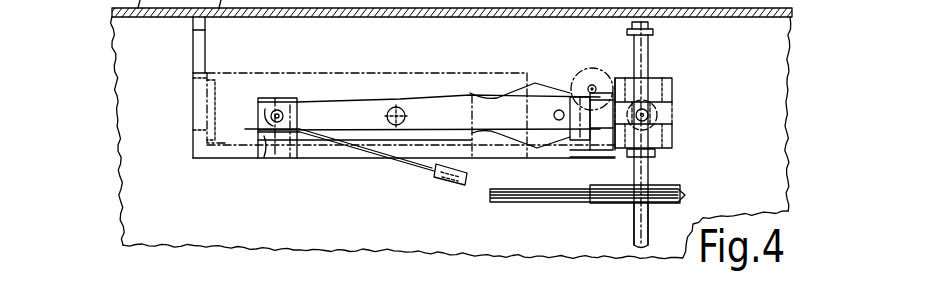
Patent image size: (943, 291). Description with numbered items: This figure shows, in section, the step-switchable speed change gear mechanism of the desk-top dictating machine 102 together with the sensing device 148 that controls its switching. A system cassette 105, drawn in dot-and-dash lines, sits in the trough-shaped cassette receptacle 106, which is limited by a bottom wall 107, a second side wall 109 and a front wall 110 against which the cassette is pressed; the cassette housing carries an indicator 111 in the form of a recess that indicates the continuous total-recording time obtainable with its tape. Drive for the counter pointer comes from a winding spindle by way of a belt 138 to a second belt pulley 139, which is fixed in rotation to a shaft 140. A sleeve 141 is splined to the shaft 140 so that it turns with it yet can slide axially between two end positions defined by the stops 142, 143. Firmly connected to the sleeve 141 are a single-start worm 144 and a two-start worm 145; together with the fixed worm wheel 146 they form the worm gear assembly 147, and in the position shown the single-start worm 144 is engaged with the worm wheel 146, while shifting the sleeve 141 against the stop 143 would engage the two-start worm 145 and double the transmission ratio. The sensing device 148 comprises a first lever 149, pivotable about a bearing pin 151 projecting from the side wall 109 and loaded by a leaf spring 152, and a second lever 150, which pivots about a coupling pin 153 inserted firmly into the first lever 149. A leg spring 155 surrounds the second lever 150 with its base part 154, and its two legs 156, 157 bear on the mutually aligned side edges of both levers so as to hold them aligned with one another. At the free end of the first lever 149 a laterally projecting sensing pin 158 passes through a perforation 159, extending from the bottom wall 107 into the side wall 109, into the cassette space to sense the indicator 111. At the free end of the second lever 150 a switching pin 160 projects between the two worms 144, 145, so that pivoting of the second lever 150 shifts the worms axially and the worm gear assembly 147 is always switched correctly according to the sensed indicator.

The desk-top dictating machine 102 is at (118, 187).
The system cassette 105 is at (222, 70).
The cassette receptacle 106 is at (205, 162).
The bottom wall 107 is at (237, 152).
The second side wall 109 is at (220, 40).
The front wall 110 is at (197, 32).
The indicator 111 is at (263, 140).
The belt 138 is at (505, 197).
The second belt pulley 139 is at (615, 204).
The shaft 140 is at (647, 220).
The sleeve 141 is at (658, 110).
The stop 142 is at (655, 157).
The stop 143 is at (653, 32).
The single-start worm 144 is at (672, 80).
The two-start worm 145 is at (672, 135).
The worm wheel 146 is at (592, 83).
The worm gear assembly 147 is at (652, 68).
The sensing device 148 is at (448, 92).
The first lever 149 is at (340, 108).
The second lever 150 is at (583, 125).
The bearing pin 151 is at (393, 106).
The leaf spring 152 is at (435, 172).
The coupling pin 153 is at (557, 110).
The base part 154 is at (602, 143).
The leg spring 155 is at (587, 143).
The leg 156 is at (513, 93).
The leg 157 is at (500, 137).
The sensing pin 158 is at (270, 107).
The perforation 159 is at (260, 110).
The switching pin 160 is at (648, 117).